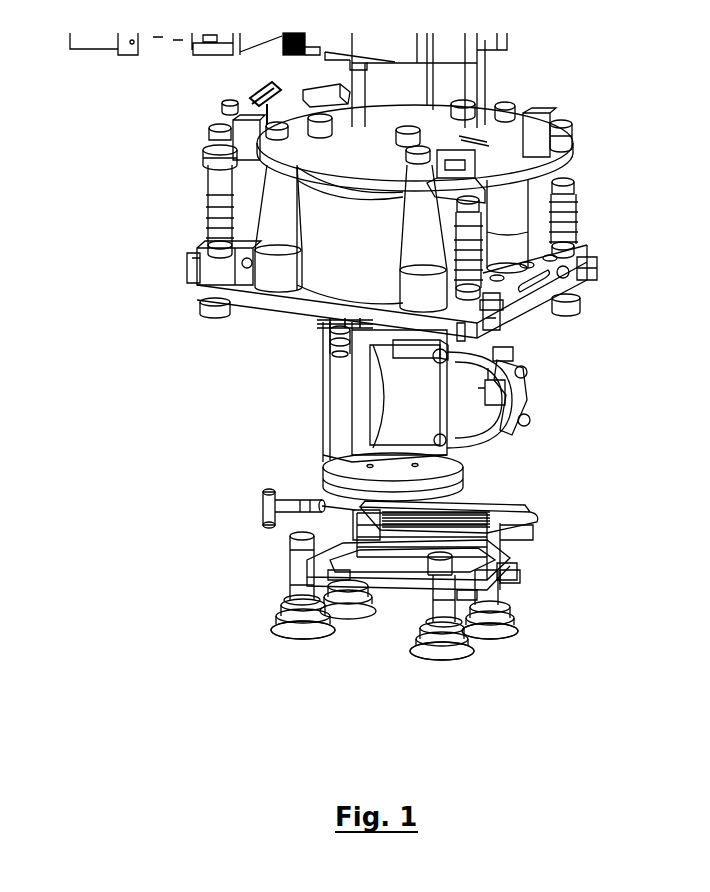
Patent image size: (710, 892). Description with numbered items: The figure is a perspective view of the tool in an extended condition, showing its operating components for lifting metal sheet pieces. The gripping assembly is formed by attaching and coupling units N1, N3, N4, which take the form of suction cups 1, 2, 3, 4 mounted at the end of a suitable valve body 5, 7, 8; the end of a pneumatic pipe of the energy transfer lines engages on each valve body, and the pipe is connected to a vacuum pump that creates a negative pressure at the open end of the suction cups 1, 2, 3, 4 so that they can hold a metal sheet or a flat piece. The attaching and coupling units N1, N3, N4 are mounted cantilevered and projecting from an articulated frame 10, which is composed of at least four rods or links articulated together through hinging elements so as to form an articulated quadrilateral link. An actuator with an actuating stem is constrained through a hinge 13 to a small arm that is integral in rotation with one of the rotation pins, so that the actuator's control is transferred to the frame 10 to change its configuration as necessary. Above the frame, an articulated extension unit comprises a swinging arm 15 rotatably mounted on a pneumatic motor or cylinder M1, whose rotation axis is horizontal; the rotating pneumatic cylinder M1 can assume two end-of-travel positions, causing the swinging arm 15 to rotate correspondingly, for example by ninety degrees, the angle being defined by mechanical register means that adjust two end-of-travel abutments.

The suction cup 1 is at (280, 630).
The suction cup 2 is at (356, 620).
The suction cup 3 is at (512, 634).
The suction cup 4 is at (468, 652).
The valve body 5 is at (297, 582).
The valve body 7 is at (487, 570).
The valve body 8 is at (455, 605).
The articulated frame 10 is at (392, 588).
The hinge 13 is at (263, 487).
The swinging arm 15 is at (353, 433).
The pneumatic motor or cylinder M1 is at (540, 381).
The attaching and coupling unit N1 is at (236, 624).
The attaching and coupling unit N3 is at (539, 605).
The attaching and coupling unit N4 is at (448, 667).